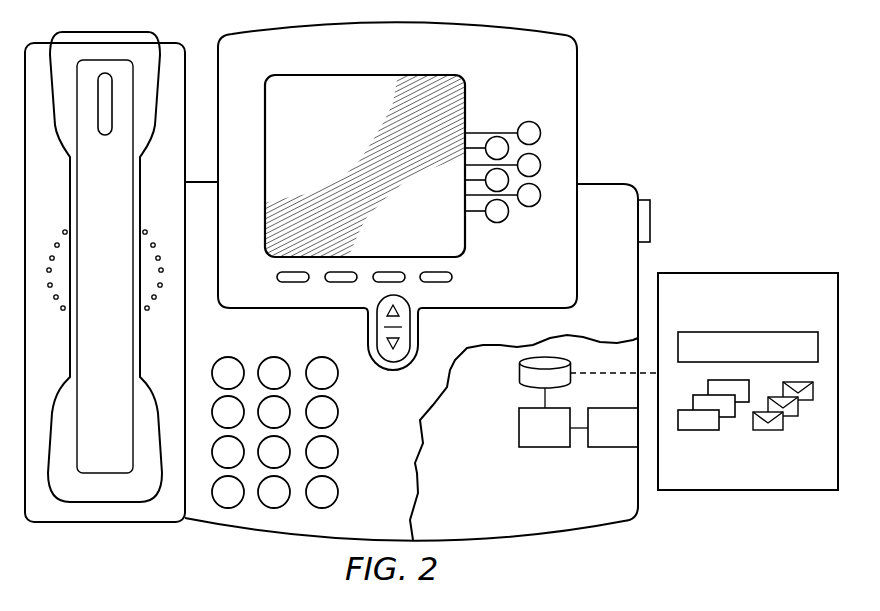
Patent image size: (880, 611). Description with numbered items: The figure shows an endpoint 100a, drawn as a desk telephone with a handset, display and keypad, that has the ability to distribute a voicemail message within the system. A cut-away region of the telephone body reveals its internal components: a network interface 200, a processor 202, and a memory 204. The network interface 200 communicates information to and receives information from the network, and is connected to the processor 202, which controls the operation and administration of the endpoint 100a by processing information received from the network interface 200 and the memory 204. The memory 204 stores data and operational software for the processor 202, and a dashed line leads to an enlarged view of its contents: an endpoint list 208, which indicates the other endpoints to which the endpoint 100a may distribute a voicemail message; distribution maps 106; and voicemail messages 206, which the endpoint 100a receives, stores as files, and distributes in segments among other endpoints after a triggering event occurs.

The endpoint 100a is at (577, 123).
The network interface 200 is at (614, 448).
The processor 202 is at (540, 447).
The memory 204 is at (519, 378).
The endpoint list 208 is at (758, 332).
The distribution maps 106 is at (698, 432).
The voicemail messages 206 is at (771, 432).